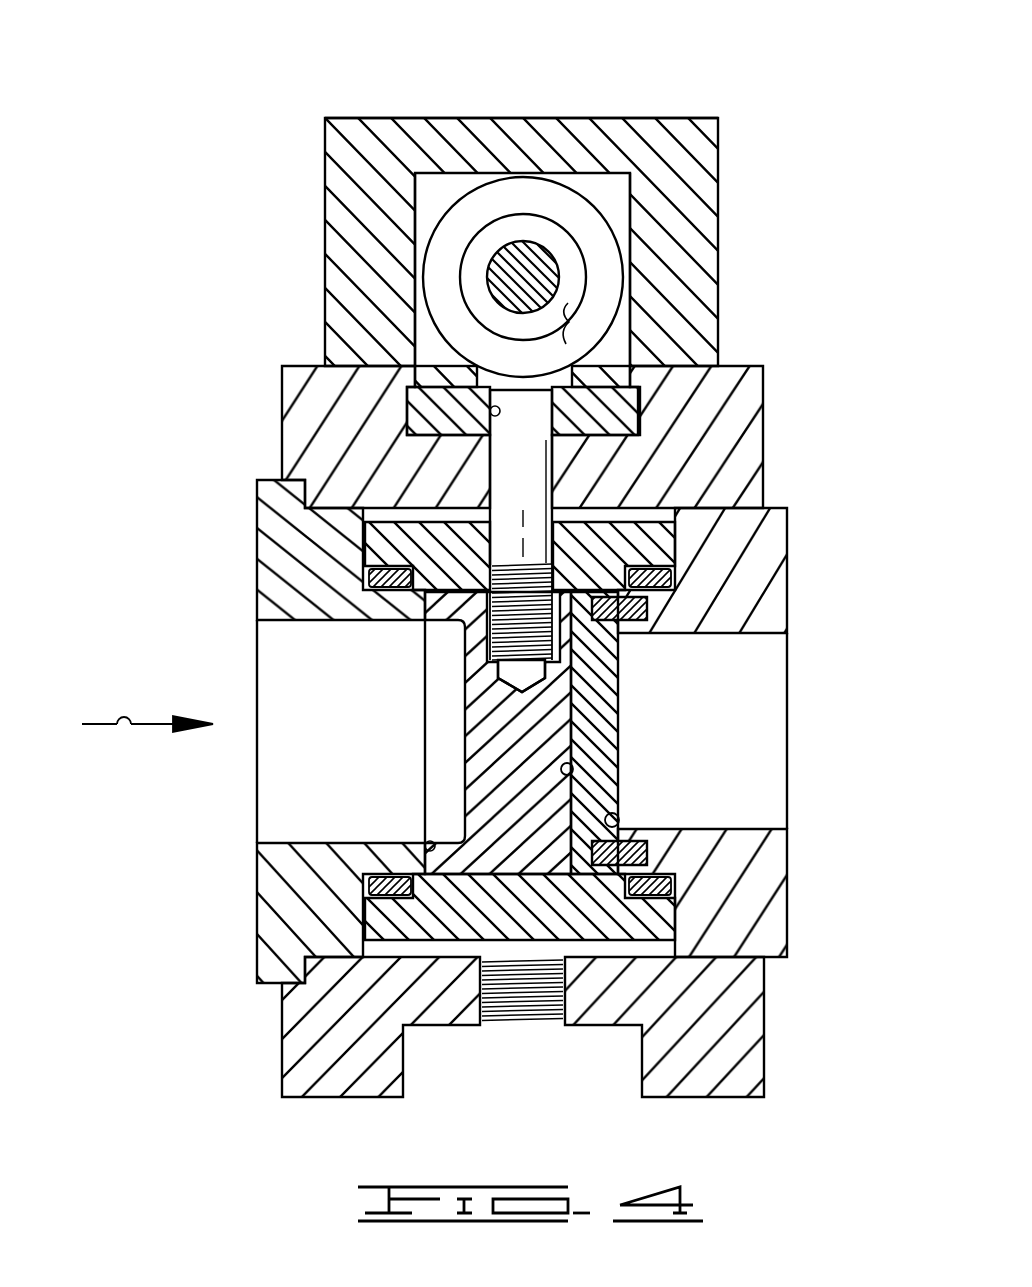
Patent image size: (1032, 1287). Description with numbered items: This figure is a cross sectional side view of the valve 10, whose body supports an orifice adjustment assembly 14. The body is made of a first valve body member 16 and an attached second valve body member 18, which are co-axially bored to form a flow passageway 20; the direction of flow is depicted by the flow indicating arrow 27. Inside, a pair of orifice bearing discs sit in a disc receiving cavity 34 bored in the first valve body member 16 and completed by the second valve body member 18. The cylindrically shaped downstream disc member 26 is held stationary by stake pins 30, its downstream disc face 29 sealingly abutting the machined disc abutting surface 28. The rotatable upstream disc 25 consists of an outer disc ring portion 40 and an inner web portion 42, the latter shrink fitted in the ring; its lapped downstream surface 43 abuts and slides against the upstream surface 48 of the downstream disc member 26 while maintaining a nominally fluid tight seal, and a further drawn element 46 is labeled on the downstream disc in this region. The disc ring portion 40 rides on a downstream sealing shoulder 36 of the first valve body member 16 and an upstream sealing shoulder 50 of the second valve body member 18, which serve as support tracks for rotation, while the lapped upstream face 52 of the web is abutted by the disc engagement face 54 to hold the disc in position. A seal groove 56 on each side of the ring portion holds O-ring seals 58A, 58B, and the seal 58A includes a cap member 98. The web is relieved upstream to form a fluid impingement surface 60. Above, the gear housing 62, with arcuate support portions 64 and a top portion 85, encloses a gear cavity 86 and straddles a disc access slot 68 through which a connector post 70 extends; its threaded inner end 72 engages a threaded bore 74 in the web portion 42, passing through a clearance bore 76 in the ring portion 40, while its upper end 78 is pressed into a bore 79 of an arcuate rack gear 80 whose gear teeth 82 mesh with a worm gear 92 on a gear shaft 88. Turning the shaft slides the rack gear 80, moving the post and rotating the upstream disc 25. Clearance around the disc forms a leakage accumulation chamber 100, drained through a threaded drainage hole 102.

The valve 10 is at (775, 58).
The orifice adjustment assembly 14 is at (400, 112).
The first valve body member 16 is at (765, 380).
The second valve body member 18 is at (257, 485).
The flow passageway 20 is at (270, 682).
The upstream disc 25 is at (446, 757).
The downstream disc member 26 is at (640, 697).
The flow indicating arrow 27 is at (120, 728).
The disc abutting surface 28 is at (620, 807).
The downstream disc face 29 is at (620, 790).
The stake pins 30 is at (642, 630).
The disc receiving cavity 34 is at (657, 500).
The downstream sealing shoulder 36 is at (675, 604).
The outer disc ring portion 40 is at (330, 992).
The inner web portion 42 is at (478, 723).
The downstream surface 43 is at (574, 745).
The piston sleeve 46 is at (574, 723).
The upstream surface 48 is at (574, 770).
The upstream sealing shoulder 50 is at (365, 600).
The upstream face 52 is at (427, 848).
The disc engagement face 54 is at (426, 840).
The seal groove 56 is at (383, 565).
The downstream seal 58A is at (648, 580).
The O-ring seal 58B is at (385, 580).
The fluid impingement surface 60 is at (462, 687).
The gear housing 62 is at (470, 118).
The support portions 64 is at (342, 185).
The disc access slot 68 is at (470, 465).
The connector post 70 is at (536, 410).
The inner end 72 is at (512, 672).
The threaded bore 74 is at (552, 647).
The clearance bore 76 is at (581, 544).
The upper end 78 is at (612, 396).
The bore 79 is at (490, 411).
The arcuate rack gear 80 is at (604, 368).
The gear teeth 82 is at (478, 380).
The top portion 85 is at (600, 120).
The gear cavity 86 is at (626, 192).
The gear shaft 88 is at (495, 280).
The worm gear 92 is at (602, 252).
The cap member 98 is at (402, 592).
The leakage accumulation chamber 100 is at (634, 953).
The threaded drainage hole 102 is at (524, 1040).